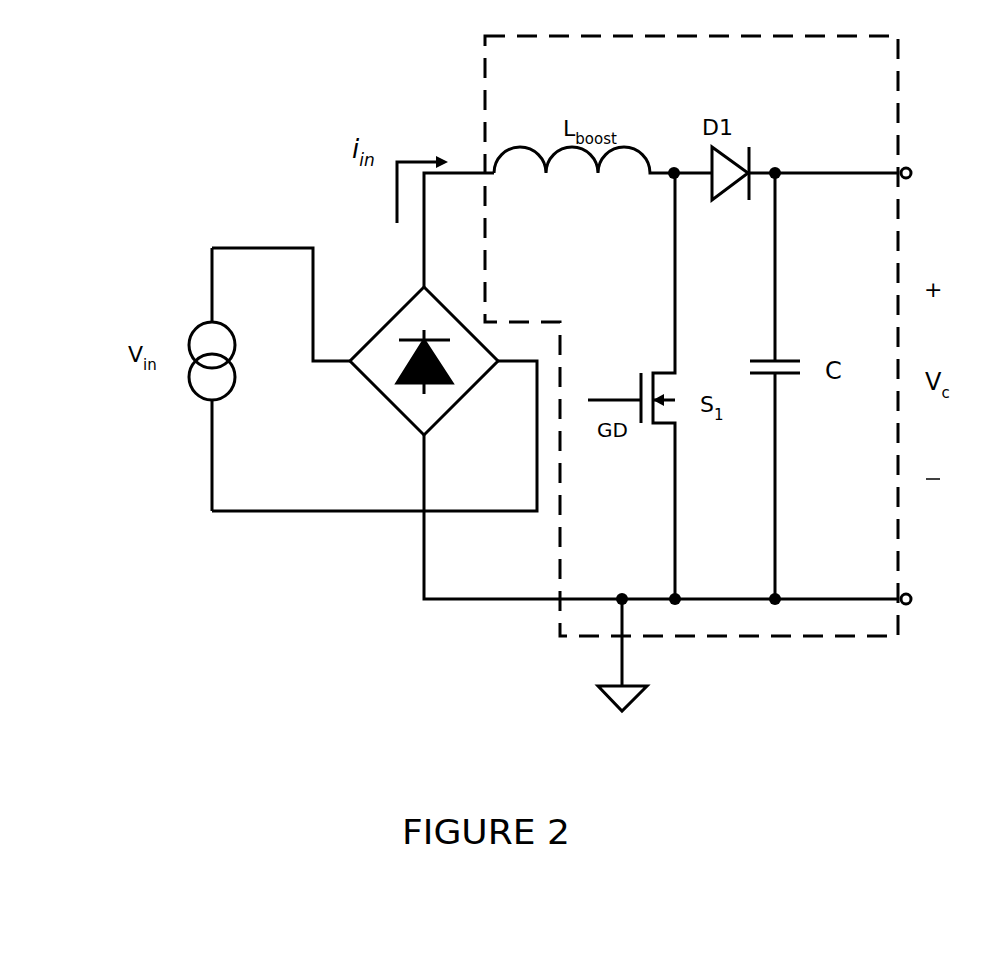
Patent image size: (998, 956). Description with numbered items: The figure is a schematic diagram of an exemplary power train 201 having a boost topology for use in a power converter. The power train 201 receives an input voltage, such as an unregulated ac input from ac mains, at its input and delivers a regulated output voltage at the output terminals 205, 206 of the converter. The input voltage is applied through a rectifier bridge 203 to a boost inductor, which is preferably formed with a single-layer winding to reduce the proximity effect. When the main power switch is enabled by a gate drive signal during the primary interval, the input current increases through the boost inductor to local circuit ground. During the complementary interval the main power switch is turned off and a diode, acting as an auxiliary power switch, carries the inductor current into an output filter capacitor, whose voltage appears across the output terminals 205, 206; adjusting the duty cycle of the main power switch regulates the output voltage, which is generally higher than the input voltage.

The power train 201 is at (866, 92).
The rectifier bridge 203 is at (424, 361).
The output terminal 205 is at (932, 174).
The output terminal 206 is at (933, 600).